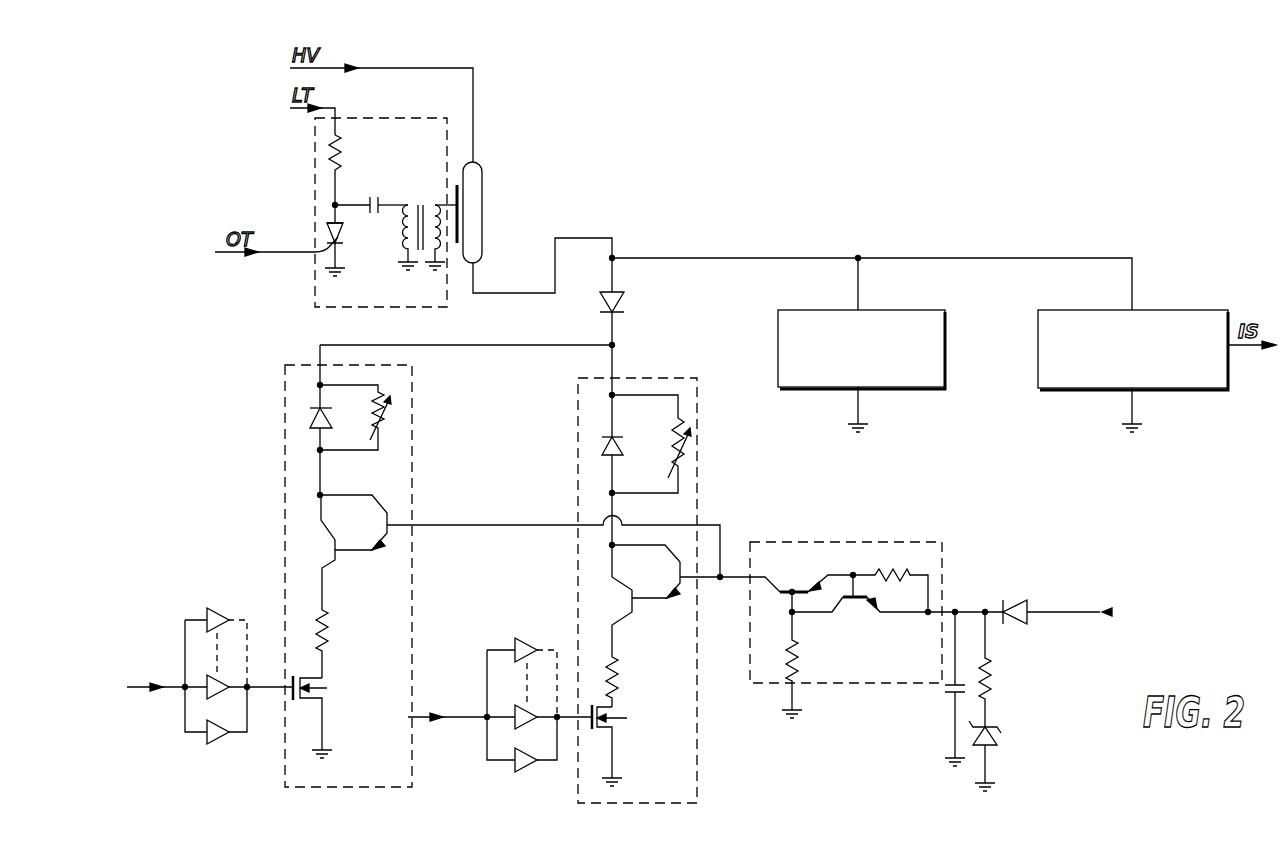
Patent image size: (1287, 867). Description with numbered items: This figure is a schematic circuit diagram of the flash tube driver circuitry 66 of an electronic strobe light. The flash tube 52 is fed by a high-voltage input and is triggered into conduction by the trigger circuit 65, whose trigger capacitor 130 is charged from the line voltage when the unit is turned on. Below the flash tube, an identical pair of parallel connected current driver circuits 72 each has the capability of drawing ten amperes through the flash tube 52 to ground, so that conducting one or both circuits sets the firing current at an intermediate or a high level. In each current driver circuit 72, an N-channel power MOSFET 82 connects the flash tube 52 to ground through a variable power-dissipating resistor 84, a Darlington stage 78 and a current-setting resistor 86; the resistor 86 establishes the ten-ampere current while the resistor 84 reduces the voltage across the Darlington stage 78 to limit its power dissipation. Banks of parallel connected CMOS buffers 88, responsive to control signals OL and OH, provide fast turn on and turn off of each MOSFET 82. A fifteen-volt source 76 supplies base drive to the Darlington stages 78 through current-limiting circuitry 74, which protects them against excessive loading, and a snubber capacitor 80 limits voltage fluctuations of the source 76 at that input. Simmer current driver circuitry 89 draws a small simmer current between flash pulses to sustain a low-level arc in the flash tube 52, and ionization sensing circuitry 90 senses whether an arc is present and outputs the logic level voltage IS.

The flash tube 52 is at (482, 197).
The trigger circuit 65 is at (447, 296).
The flash tube driver circuitry 66 is at (287, 338).
The current driver circuit 72 is at (414, 410).
The current-limiting circuitry 74 is at (940, 580).
The 15-volt source 76 is at (1121, 605).
The Darlington stage 78 is at (377, 560).
The snubber capacitor 80 is at (951, 690).
The N-channel power MOSFET 82 is at (300, 676).
The variable power-dissipating resistor 84 is at (378, 432).
The current-setting resistor 86 is at (330, 628).
The CMOS buffers 88 is at (224, 598).
The simmer current driver circuitry 89 is at (944, 362).
The ionization sensing circuitry 90 is at (1178, 390).
The trigger capacitor 130 is at (370, 197).